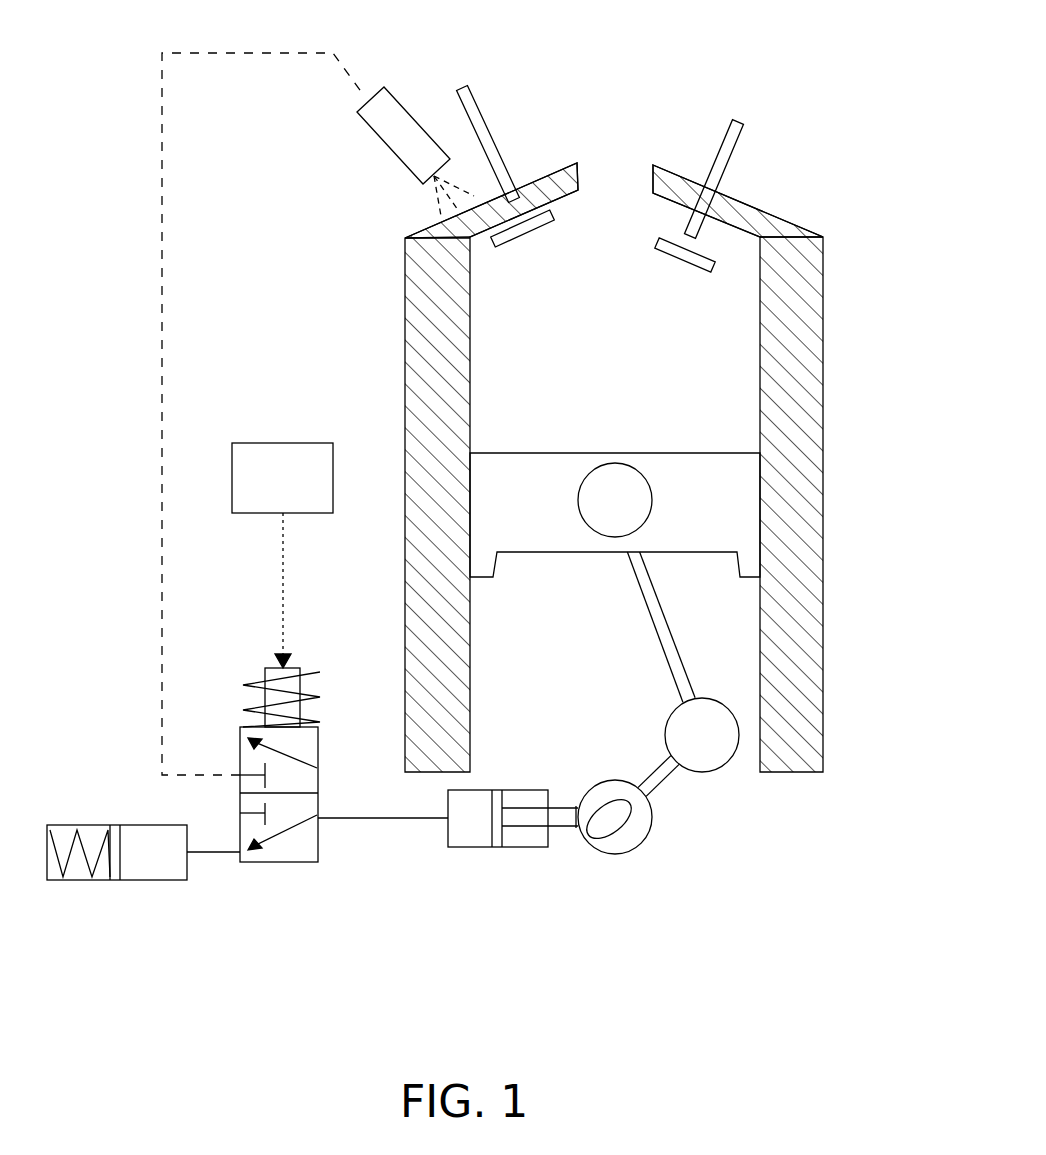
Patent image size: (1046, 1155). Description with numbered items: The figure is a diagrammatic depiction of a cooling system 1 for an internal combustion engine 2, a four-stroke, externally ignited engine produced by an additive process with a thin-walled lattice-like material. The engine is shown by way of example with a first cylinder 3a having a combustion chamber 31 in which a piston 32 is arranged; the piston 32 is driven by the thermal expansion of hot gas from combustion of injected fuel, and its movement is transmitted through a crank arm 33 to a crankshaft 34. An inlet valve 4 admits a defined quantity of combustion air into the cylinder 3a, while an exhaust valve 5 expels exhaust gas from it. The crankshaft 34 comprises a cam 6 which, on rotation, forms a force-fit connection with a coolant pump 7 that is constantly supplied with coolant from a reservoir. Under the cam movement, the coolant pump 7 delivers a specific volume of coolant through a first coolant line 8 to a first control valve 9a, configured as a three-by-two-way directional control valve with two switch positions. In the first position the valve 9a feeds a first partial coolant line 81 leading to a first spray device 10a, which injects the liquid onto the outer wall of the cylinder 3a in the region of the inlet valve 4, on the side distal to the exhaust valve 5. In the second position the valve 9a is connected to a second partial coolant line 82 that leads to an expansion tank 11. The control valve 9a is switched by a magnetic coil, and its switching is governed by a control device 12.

The cooling system 1 is at (818, 843).
The internal combustion engine 2 is at (858, 530).
The first cylinder 3a is at (826, 283).
The combustion chamber 31 is at (740, 253).
The piston 32 is at (740, 478).
The crank arm 33 is at (700, 700).
The crankshaft 34 is at (657, 830).
The inlet valve 4 is at (498, 133).
The exhaust valve 5 is at (745, 150).
The cam 6 is at (593, 852).
The coolant pump 7 is at (470, 850).
The first coolant line 8 is at (380, 850).
The first partial coolant line 81 is at (162, 555).
The second partial coolant line 82 is at (220, 882).
The first control valve 9a is at (285, 882).
The first spray device 10a is at (420, 112).
The expansion tank 11 is at (82, 882).
The control device 12 is at (232, 468).